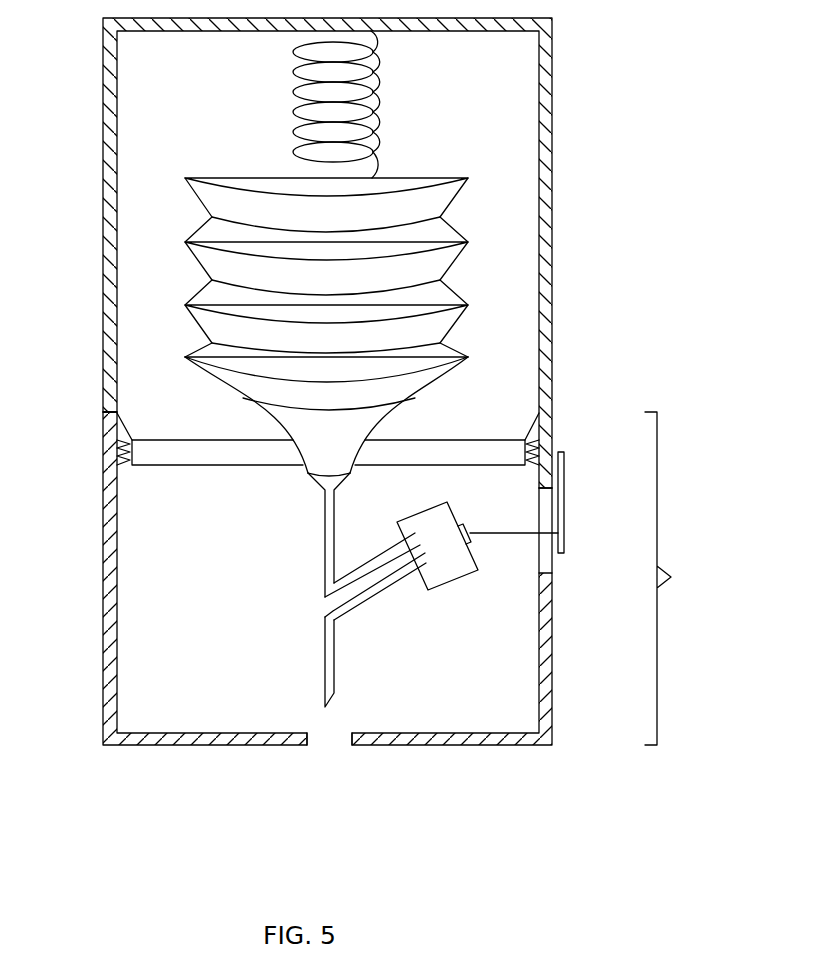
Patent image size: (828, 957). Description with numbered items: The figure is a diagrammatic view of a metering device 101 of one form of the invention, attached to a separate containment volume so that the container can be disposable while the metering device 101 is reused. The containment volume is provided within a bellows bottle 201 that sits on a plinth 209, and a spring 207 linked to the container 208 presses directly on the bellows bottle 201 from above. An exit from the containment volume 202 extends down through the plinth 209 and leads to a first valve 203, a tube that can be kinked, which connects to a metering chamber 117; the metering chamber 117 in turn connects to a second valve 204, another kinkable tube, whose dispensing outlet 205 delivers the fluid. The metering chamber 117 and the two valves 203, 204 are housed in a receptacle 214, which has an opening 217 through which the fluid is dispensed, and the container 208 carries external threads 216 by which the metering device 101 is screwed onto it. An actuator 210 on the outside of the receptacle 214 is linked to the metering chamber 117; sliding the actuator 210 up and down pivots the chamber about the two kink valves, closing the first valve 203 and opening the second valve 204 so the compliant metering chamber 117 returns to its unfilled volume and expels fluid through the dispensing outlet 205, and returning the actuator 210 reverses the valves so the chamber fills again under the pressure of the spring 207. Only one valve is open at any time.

The metering device 101 is at (687, 578).
The metering chamber 117 is at (452, 572).
The bellows bottle 201 is at (432, 300).
The exit from the containment volume 202 is at (327, 482).
The first valve 203 is at (330, 587).
The second valve 204 is at (335, 618).
The dispensing outlet 205 is at (330, 693).
The spring 207 is at (376, 113).
The container 208 is at (113, 382).
The plinth 209 is at (205, 455).
The actuator 210 is at (565, 513).
The receptacle 214 is at (552, 672).
The external threads 216 is at (130, 464).
The opening 217 is at (335, 740).